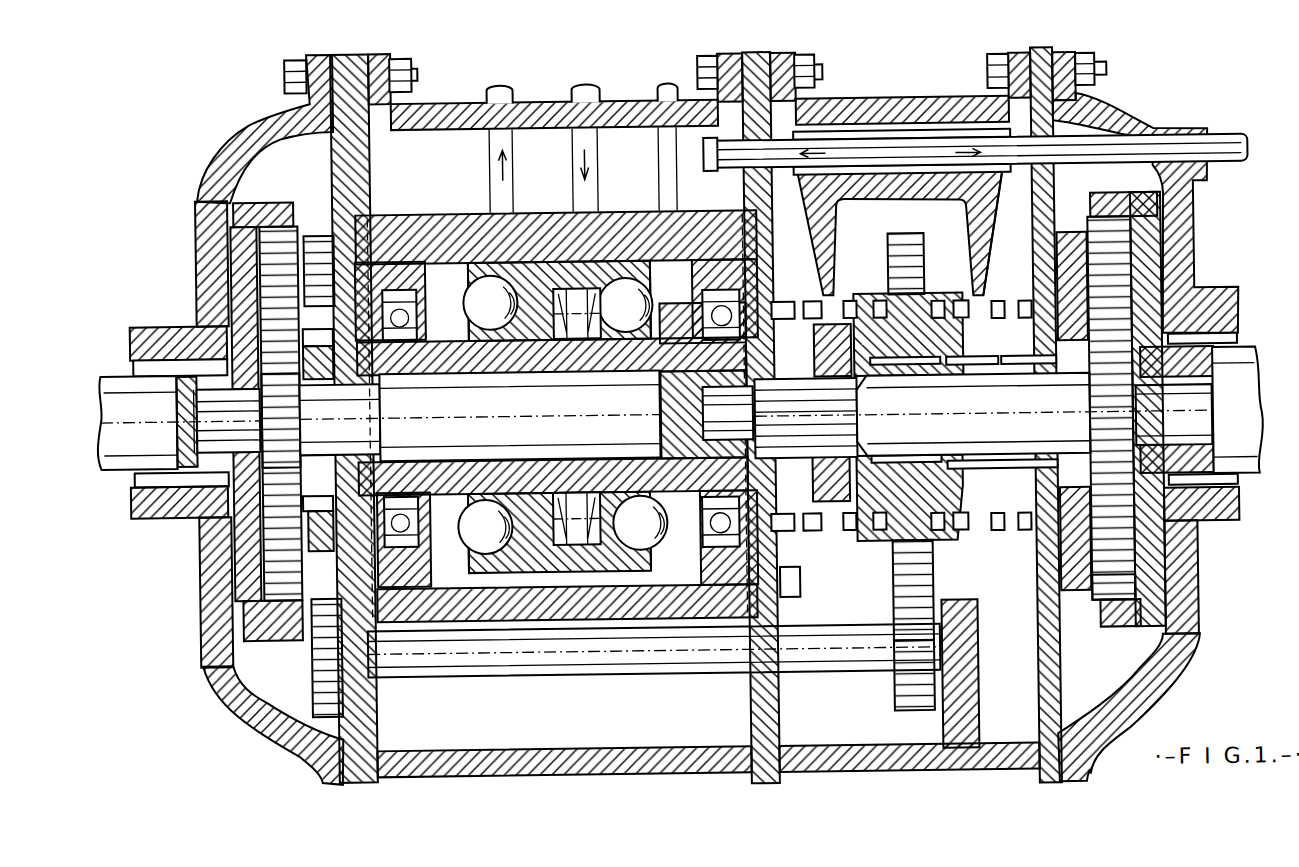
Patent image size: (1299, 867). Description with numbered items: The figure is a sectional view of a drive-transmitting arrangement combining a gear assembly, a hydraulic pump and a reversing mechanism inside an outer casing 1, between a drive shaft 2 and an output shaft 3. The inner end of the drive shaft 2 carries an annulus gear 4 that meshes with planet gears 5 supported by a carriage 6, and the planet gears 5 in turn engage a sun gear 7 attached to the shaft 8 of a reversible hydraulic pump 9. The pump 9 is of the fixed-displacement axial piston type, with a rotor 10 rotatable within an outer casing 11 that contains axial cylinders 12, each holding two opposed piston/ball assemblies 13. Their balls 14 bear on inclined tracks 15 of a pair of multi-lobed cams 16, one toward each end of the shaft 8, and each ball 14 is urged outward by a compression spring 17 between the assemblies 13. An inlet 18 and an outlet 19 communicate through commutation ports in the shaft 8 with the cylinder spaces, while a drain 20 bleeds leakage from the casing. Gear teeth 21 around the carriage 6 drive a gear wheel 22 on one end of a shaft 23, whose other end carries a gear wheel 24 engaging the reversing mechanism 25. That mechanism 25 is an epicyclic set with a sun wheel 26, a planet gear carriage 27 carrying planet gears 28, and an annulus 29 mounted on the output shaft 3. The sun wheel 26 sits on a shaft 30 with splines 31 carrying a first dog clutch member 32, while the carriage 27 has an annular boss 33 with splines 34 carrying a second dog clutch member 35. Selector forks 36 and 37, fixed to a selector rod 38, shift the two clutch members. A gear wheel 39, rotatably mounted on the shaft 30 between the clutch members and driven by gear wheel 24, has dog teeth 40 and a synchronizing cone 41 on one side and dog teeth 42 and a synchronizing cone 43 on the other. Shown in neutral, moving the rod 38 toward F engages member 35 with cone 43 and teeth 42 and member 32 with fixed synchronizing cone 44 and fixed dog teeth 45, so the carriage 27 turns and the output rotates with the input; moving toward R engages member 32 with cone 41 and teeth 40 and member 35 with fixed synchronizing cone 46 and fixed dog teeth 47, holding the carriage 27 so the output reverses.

The outer casing 1 is at (213, 175).
The drive shaft 2 is at (128, 385).
The output shaft 3 is at (1238, 372).
The annulus gear 4 is at (276, 210).
The planet gears 5 is at (282, 245).
The carriage 6 is at (318, 260).
The sun gear 7 is at (278, 478).
The shaft 8 is at (352, 410).
The reversible hydraulic pump 9 is at (412, 192).
The rotor 10 is at (531, 408).
The outer casing 11 is at (432, 230).
The axial cylinders 12 is at (526, 250).
The piston/ball assemblies 13 is at (492, 265).
The balls 14 is at (497, 310).
The inclined tracks 15 is at (455, 345).
The multi-lobed cams 16 is at (432, 305).
The compression spring 17 is at (540, 522).
The inlet 18 is at (575, 172).
The outlet 19 is at (492, 165).
The drain 20 is at (665, 178).
The gear teeth 21 is at (318, 255).
The gear wheel 22 is at (320, 670).
The shaft 23 is at (500, 670).
The gear wheel 24 is at (900, 676).
The reversing mechanism 25 is at (870, 576).
The sun wheel 26 is at (1128, 500).
The planet gear carriage 27 is at (1070, 260).
The planet gears 28 is at (1112, 600).
The annulus 29 is at (1128, 628).
The shaft 30 is at (923, 411).
The splines 31 is at (786, 385).
The dog clutch member 32 is at (850, 392).
The annular boss 33 is at (1040, 370).
The splines 34 is at (1012, 370).
The second dog clutch member 35 is at (985, 370).
The selector fork 36 is at (822, 255).
The selector fork 37 is at (985, 250).
The selector rod 38 is at (1018, 170).
The gear wheel 39 is at (900, 262).
The dog teeth 40 is at (880, 296).
The synchronizing cone 41 is at (852, 302).
The dog teeth 42 is at (939, 303).
The synchronizing cone 43 is at (960, 303).
The fixed synchronizing cone 44 is at (814, 302).
The fixed dog teeth 45 is at (784, 302).
The fixed synchronizing cone 46 is at (999, 304).
The fixed dog teeth 47 is at (1026, 304).